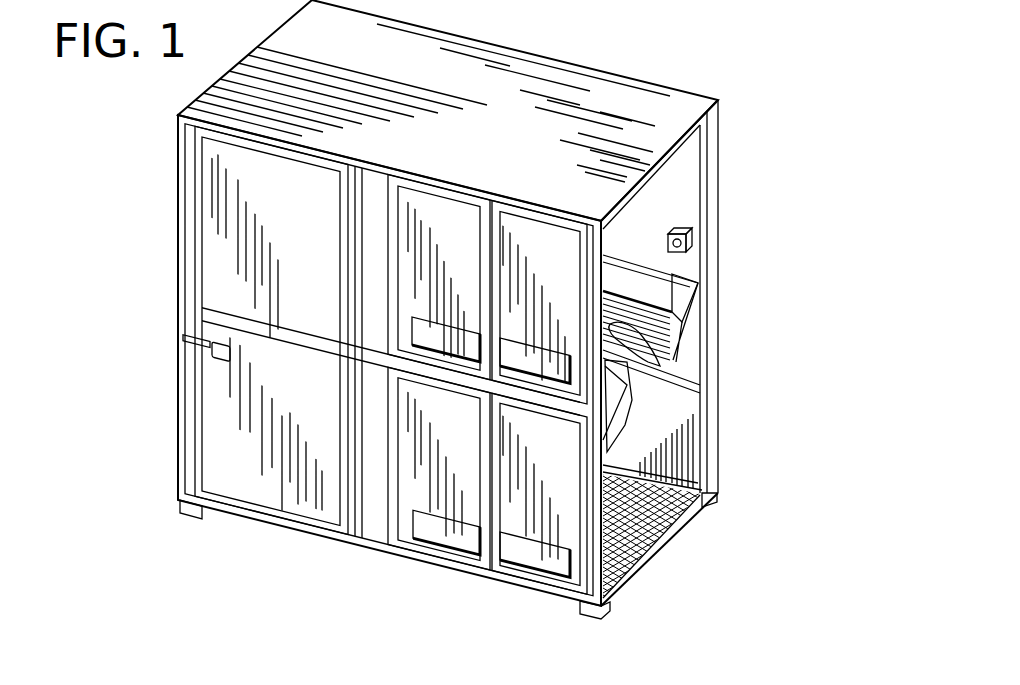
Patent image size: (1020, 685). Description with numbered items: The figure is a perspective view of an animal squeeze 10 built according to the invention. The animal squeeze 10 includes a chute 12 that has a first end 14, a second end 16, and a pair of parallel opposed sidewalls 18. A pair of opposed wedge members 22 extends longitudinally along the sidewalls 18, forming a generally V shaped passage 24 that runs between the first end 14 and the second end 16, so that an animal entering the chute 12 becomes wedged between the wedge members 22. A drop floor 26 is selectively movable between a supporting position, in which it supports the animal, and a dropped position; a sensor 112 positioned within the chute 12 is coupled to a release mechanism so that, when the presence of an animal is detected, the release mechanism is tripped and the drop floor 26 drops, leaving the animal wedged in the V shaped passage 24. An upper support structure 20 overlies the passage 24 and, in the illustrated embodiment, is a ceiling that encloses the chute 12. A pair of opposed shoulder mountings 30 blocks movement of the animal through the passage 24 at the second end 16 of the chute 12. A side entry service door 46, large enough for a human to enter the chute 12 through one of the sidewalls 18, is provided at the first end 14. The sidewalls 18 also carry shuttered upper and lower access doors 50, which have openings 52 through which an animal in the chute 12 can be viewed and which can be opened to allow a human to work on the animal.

The animal squeeze 10 is at (760, 84).
The chute 12 is at (718, 157).
The first end 14 is at (178, 275).
The second end 16 is at (718, 256).
The sidewalls 18 is at (358, 283).
The upper support structure 20 is at (581, 97).
The wedge members 22 is at (640, 293).
The V shaped passage 24 is at (647, 348).
The drop floor 26 is at (632, 515).
The shoulder mountings 30 is at (677, 321).
The side entry service door 46 is at (225, 257).
The shuttered access doors 50 is at (552, 255).
The openings 52 is at (520, 357).
The sensor 112 is at (677, 236).